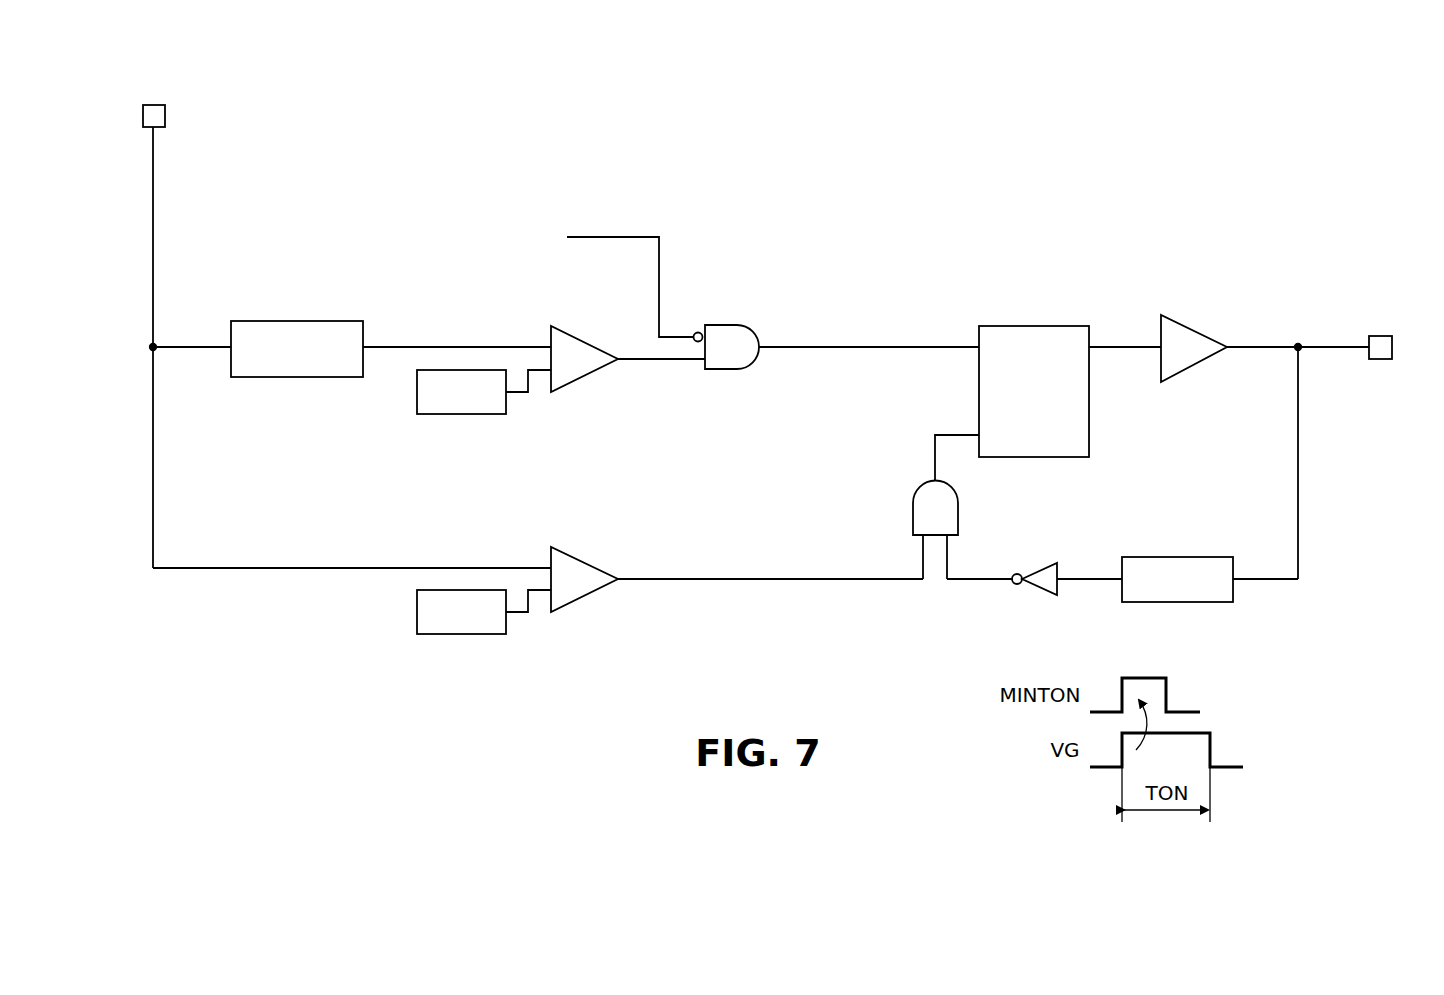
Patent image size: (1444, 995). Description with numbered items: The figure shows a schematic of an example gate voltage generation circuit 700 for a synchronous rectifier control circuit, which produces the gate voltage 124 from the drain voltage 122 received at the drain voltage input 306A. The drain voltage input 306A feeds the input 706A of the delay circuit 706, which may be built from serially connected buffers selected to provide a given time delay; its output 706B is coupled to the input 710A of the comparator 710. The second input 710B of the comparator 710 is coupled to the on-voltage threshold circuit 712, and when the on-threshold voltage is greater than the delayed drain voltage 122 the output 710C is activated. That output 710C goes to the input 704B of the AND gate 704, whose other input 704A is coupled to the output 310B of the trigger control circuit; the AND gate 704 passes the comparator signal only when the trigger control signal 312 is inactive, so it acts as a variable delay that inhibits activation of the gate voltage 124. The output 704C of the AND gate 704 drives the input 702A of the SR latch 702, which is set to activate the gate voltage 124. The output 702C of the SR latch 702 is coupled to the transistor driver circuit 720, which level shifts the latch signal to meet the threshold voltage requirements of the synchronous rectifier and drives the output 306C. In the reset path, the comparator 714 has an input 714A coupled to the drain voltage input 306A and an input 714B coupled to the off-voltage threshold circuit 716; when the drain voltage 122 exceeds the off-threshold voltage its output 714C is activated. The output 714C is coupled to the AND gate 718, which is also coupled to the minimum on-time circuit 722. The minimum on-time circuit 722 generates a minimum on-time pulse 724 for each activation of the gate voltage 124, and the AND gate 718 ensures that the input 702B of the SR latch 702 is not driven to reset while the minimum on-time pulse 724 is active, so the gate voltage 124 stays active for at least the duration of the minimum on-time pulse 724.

The gate voltage generation circuit 700 is at (1140, 138).
The drain voltage input 306A is at (153, 140).
The drain voltage 122 is at (153, 236).
The input of the delay circuit 706A is at (222, 347).
The delay circuit 706 is at (297, 321).
The output of the delay circuit 706B is at (378, 347).
The input of the comparator 710A is at (537, 347).
The comparator 710 is at (592, 337).
The input of the comparator 710B is at (537, 374).
The output of the comparator 710C is at (622, 362).
The on-voltage threshold circuit 712 is at (462, 414).
The output of the trigger control circuit 310B is at (580, 237).
The trigger control signal 312 is at (627, 237).
The input of the AND gate 704A is at (682, 330).
The AND gate 704 is at (730, 325).
The input of the AND gate 704B is at (695, 362).
The output of the AND gate 704C is at (775, 350).
The input of the SR latch 702A is at (965, 347).
The SR latch 702 is at (1032, 326).
The input of the SR latch 702B is at (965, 435).
The output of the SR latch 702C is at (1103, 347).
The transistor driver circuit 720 is at (1198, 328).
The gate voltage 124 is at (1335, 350).
The output 306C is at (1383, 335).
The AND gate 718 is at (960, 516).
The minimum on-time pulse 724 is at (1090, 582).
The minimum on-time circuit 722 is at (1177, 603).
The input of the comparator 714A is at (537, 568).
The comparator 714 is at (592, 558).
The input of the comparator 714B is at (537, 594).
The output of the comparator 714C is at (622, 582).
The off-voltage threshold circuit 716 is at (462, 634).